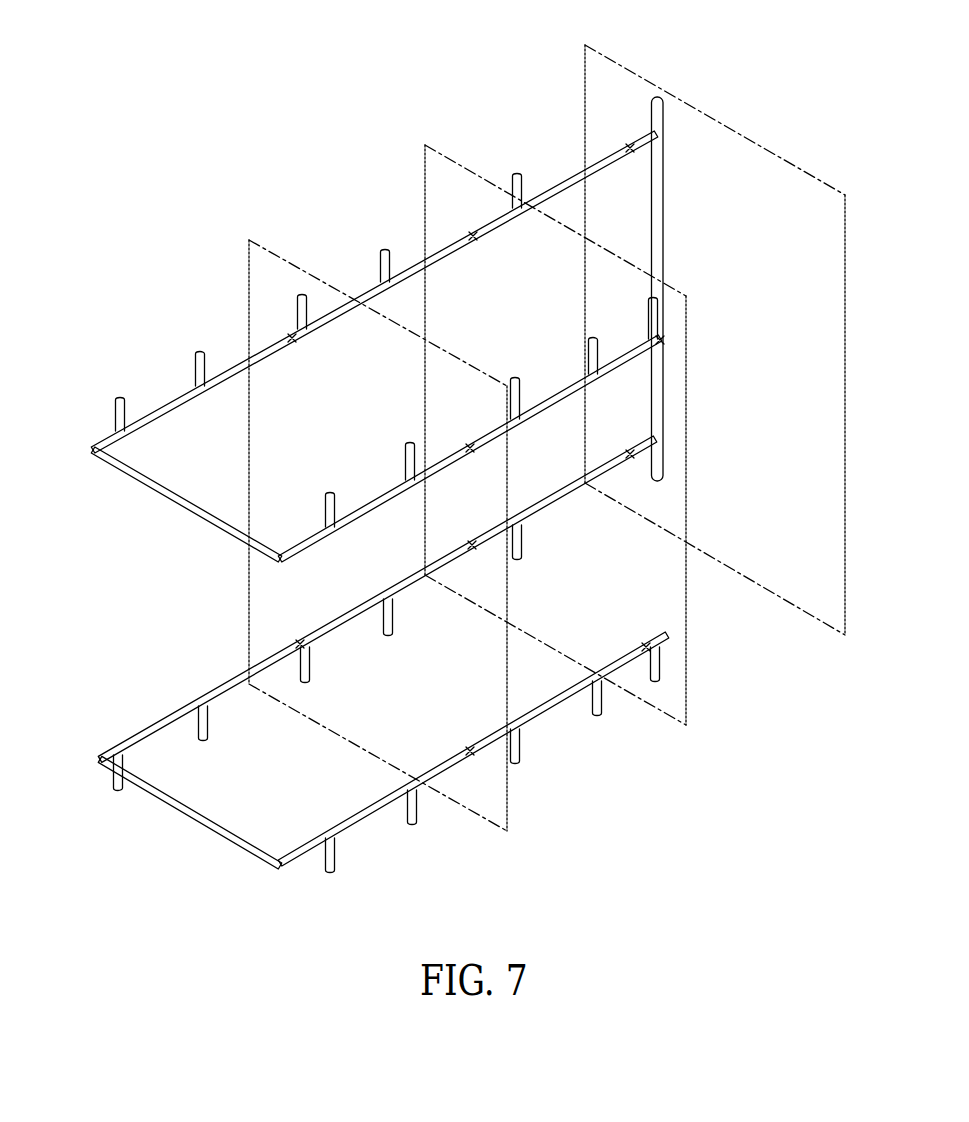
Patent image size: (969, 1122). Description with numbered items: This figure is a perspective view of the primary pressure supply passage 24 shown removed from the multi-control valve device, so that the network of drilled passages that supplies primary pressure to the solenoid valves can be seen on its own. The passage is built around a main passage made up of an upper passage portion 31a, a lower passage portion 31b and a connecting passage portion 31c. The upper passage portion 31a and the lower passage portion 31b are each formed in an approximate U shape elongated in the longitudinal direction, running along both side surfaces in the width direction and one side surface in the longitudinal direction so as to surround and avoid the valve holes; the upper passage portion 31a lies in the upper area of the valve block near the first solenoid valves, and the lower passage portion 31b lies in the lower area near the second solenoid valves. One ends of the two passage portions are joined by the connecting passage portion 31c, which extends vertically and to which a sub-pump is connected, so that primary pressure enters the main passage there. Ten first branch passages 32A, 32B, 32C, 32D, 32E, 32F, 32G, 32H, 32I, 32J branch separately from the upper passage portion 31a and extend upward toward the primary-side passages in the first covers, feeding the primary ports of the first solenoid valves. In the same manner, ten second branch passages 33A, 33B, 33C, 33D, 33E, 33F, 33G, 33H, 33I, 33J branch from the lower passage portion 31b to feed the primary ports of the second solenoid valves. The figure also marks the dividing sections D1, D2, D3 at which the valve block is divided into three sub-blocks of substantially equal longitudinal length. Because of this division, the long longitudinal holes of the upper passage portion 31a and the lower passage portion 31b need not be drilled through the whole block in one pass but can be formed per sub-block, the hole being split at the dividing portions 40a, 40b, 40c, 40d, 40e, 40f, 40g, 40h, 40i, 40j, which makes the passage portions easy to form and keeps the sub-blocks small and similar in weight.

The primary pressure supply passage 24 is at (320, 200).
The dividing section D1 is at (248, 262).
The dividing section D2 is at (423, 165).
The dividing section D3 is at (583, 65).
The upper passage portion 31a is at (168, 500).
The lower passage portion 31b is at (175, 806).
The connecting passage portion 31c is at (664, 228).
The first branch passage 32A is at (325, 497).
The first branch passage 32B is at (405, 452).
The first branch passage 32C is at (510, 392).
The first branch passage 32D is at (588, 347).
The first branch passage 32E is at (648, 308).
The first branch passage 32F is at (115, 415).
The first branch passage 32G is at (195, 372).
The first branch passage 32H is at (297, 312).
The first branch passage 32I is at (380, 265).
The first branch passage 32J is at (512, 190).
The second branch passage 33A is at (332, 873).
The second branch passage 33B is at (415, 825).
The second branch passage 33C is at (518, 764).
The second branch passage 33D is at (600, 715).
The second branch passage 33E is at (660, 681).
The second branch passage 33F is at (120, 790).
The second branch passage 33G is at (207, 740).
The second branch passage 33H is at (310, 683).
The second branch passage 33I is at (390, 636).
The second branch passage 33J is at (520, 560).
The dividing portion 40a is at (471, 453).
The dividing portion 40b is at (663, 346).
The dividing portion 40c is at (294, 344).
The dividing portion 40d is at (474, 242).
The dividing portion 40e is at (629, 146).
The dividing portion 40f is at (470, 747).
The dividing portion 40g is at (646, 645).
The dividing portion 40h is at (300, 641).
The dividing portion 40i is at (473, 542).
The dividing portion 40j is at (627, 452).